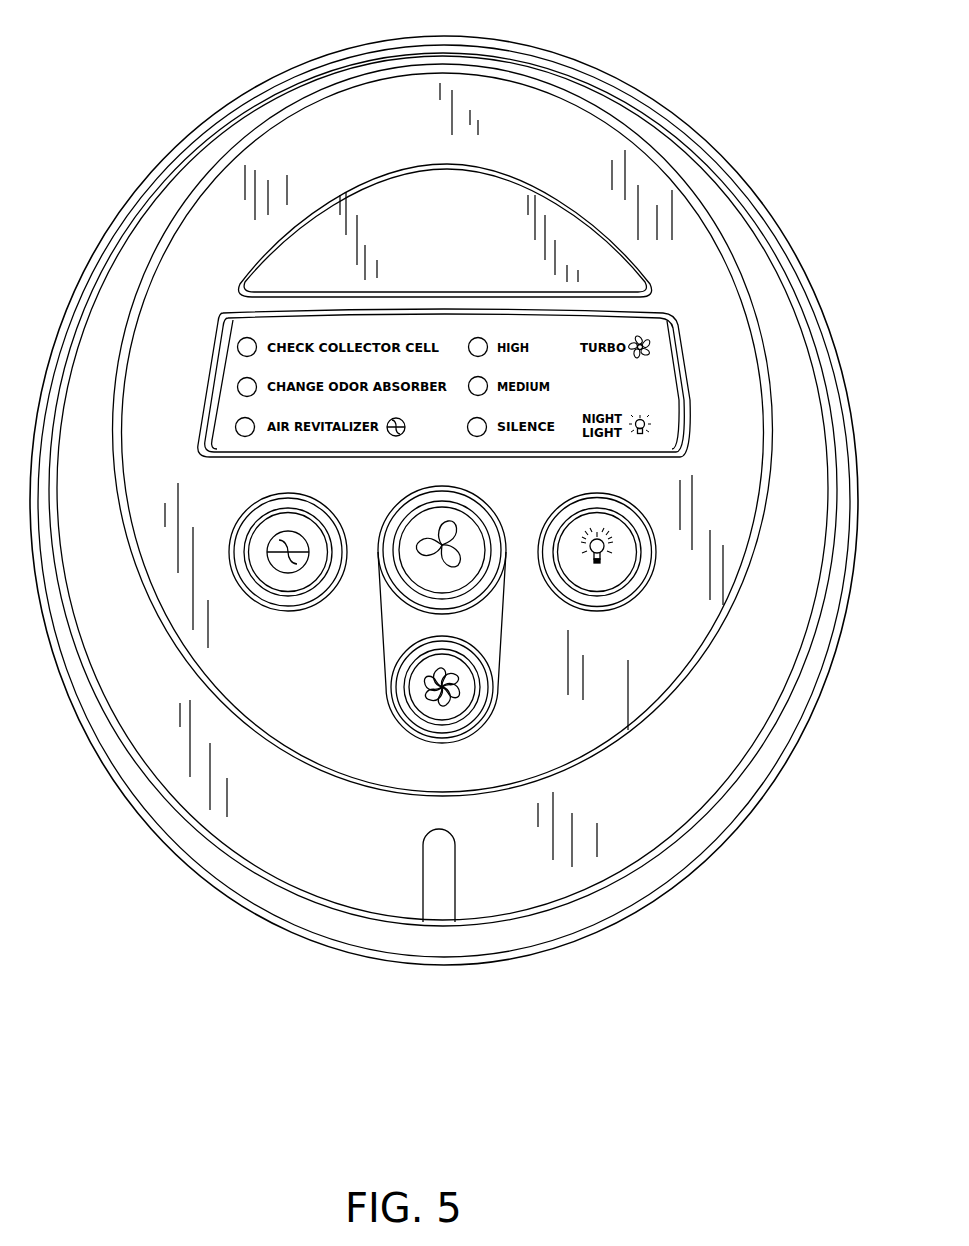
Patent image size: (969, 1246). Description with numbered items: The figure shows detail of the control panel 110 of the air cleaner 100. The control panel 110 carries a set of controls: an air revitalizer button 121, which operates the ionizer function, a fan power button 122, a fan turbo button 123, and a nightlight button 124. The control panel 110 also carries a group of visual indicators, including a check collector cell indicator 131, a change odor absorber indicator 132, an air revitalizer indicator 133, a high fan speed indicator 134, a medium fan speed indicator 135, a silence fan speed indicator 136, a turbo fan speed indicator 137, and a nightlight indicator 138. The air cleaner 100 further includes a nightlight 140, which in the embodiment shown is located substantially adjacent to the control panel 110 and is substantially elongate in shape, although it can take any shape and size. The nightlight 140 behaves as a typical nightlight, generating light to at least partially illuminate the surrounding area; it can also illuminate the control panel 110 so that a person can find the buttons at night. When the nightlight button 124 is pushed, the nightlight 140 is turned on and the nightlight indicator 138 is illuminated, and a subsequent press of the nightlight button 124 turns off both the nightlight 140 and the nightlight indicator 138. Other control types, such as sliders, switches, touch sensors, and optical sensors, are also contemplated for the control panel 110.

The air cleaner 100 is at (150, 828).
The control panel 110 is at (558, 113).
The air revitalizer button 121 is at (282, 607).
The fan power button 122 is at (402, 598).
The fan turbo button 123 is at (490, 694).
The nightlight button 124 is at (560, 597).
The check collector cell indicator 131 is at (243, 340).
The change odor absorber indicator 132 is at (237, 388).
The air revitalizer indicator 133 is at (245, 431).
The high fan speed indicator 134 is at (479, 340).
The medium fan speed indicator 135 is at (487, 379).
The silence fan speed indicator 136 is at (483, 433).
The turbo fan speed indicator 137 is at (652, 345).
The nightlight indicator 138 is at (652, 426).
The nightlight 140 is at (437, 865).